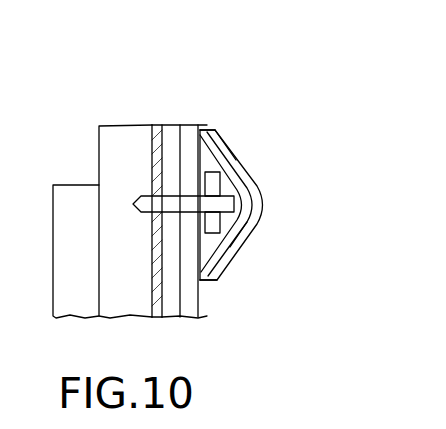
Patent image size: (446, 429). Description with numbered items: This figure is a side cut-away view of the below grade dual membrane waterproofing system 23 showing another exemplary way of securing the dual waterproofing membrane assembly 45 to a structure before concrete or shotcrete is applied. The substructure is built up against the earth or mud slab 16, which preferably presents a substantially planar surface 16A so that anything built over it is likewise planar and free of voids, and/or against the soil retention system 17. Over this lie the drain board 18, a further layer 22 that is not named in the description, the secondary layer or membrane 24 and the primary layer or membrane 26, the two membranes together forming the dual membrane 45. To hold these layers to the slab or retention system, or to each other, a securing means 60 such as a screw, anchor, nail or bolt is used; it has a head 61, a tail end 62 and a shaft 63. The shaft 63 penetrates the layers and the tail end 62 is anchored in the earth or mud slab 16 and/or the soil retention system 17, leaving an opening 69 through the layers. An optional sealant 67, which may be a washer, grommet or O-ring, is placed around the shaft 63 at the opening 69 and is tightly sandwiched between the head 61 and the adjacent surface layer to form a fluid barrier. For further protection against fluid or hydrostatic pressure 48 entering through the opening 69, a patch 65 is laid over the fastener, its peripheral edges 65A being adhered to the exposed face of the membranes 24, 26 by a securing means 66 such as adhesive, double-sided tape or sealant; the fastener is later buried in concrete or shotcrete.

The below grade dual membrane waterproofing system 23 is at (233, 50).
The fluid or hydrostatic pressure environment 48 is at (78, 185).
The earth or mud slab 16 is at (102, 165).
The planar surface 16A is at (152, 148).
The soil retention system 17 is at (158, 125).
The drain board 18 is at (175, 125).
The third layer 22 is at (190, 125).
The secondary layer or membrane 24 is at (203, 127).
The primary layer or membrane 26 is at (197, 300).
The dual waterproofing membrane assembly 45 is at (192, 316).
The tail end 62 is at (141, 213).
The opening 69 is at (175, 196).
The shaft 63 is at (190, 214).
The securing means 60 is at (255, 183).
The head 61 is at (255, 205).
The securing means for patch 66 is at (235, 236).
The optional sealant 67 is at (233, 172).
The patch 65 is at (233, 250).
The peripheral edges 65A is at (212, 132).